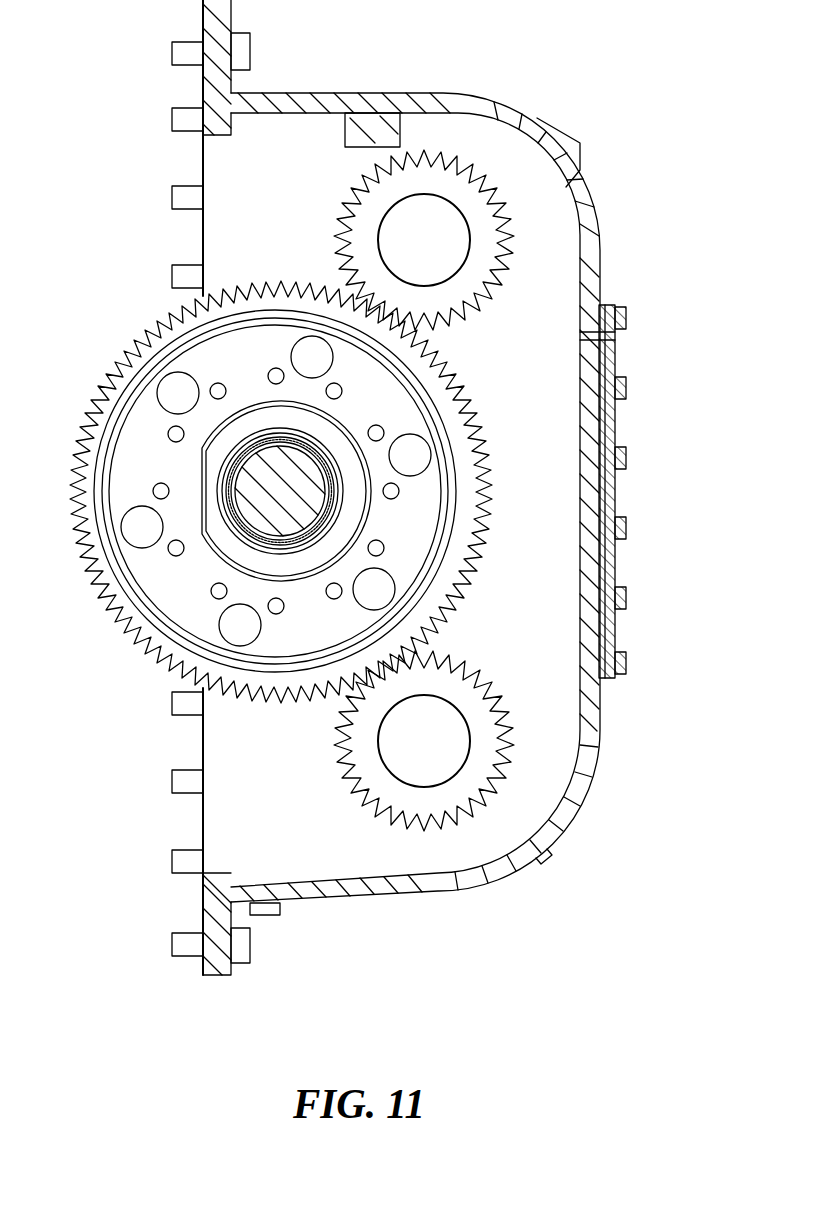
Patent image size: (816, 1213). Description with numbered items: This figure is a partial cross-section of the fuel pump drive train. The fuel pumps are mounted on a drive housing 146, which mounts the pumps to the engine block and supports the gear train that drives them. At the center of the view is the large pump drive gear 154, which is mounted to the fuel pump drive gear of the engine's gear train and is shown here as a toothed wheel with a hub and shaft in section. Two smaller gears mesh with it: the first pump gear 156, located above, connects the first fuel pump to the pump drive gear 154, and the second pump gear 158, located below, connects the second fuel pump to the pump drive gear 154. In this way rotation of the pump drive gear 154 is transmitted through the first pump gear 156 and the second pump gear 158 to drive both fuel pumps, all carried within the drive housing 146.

The drive housing 146 is at (587, 203).
The pump drive gear 154 is at (112, 355).
The first pump gear 156 is at (427, 152).
The second pump gear 158 is at (455, 785).